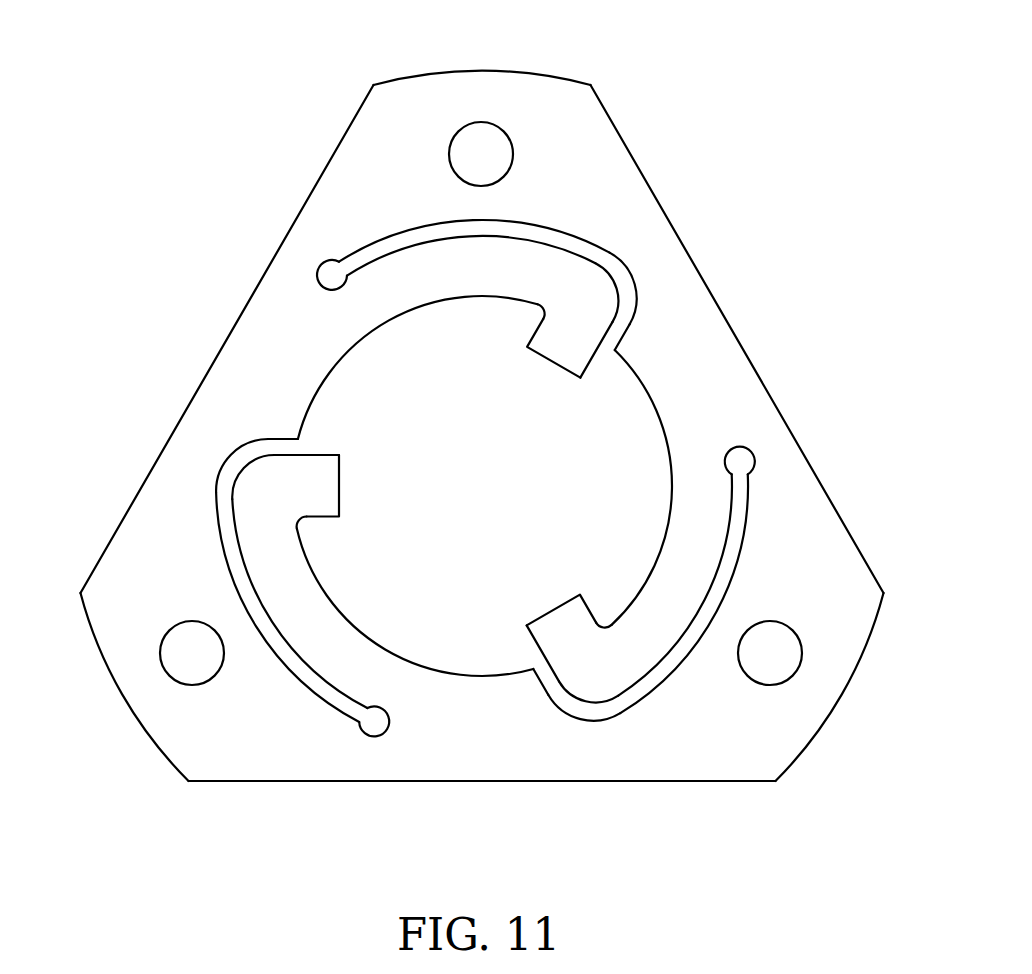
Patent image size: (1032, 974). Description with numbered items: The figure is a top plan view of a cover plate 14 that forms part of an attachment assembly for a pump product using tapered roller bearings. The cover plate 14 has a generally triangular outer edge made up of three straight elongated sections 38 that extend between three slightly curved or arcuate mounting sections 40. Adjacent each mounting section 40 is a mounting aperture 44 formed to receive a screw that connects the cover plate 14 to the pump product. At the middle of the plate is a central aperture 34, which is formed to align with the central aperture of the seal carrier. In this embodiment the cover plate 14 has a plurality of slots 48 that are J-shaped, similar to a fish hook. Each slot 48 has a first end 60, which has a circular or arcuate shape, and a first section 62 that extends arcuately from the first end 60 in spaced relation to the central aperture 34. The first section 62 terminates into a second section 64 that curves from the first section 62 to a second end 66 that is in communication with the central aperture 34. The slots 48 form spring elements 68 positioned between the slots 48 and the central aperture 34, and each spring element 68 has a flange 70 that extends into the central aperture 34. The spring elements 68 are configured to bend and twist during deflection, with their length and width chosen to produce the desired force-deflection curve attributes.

The cover plate 14 is at (722, 50).
The central aperture 34 is at (514, 518).
The straight elongated section 38 is at (230, 335).
The arcuate mounting section 40 is at (482, 72).
The mounting aperture 44 is at (458, 132).
The slot 48 is at (493, 443).
The first end 60 is at (322, 286).
The first section 62 is at (428, 241).
The second section 64 is at (639, 308).
The second end 66 is at (600, 347).
The spring element 68 is at (497, 298).
The flange 70 is at (553, 364).